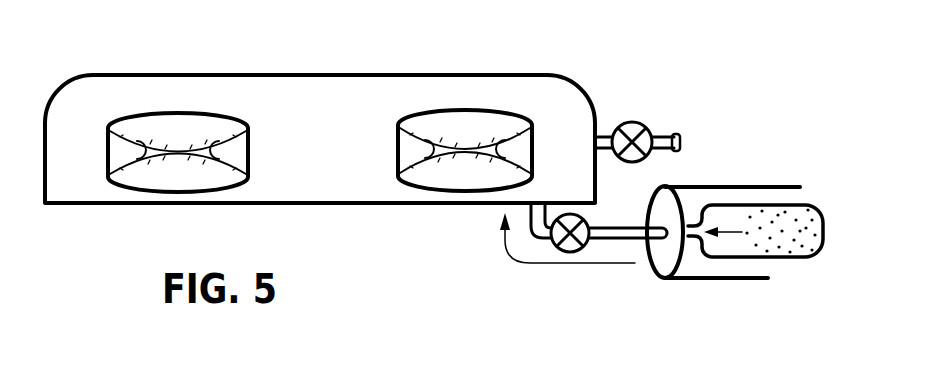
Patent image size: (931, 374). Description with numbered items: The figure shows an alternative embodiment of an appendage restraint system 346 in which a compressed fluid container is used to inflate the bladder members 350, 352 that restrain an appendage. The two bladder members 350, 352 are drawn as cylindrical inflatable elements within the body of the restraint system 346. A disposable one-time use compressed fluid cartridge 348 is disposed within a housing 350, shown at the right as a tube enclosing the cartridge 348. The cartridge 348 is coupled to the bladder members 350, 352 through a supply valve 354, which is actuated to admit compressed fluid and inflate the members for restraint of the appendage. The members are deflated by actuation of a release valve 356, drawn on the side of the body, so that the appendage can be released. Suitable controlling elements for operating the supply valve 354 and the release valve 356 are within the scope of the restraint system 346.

The restraint system 346 is at (567, 60).
The compressed fluid cartridge 348 is at (798, 259).
The bladder member 350 is at (182, 132).
The bladder member 352 is at (462, 125).
The supply valve 354 is at (574, 215).
The release valve 356 is at (634, 122).